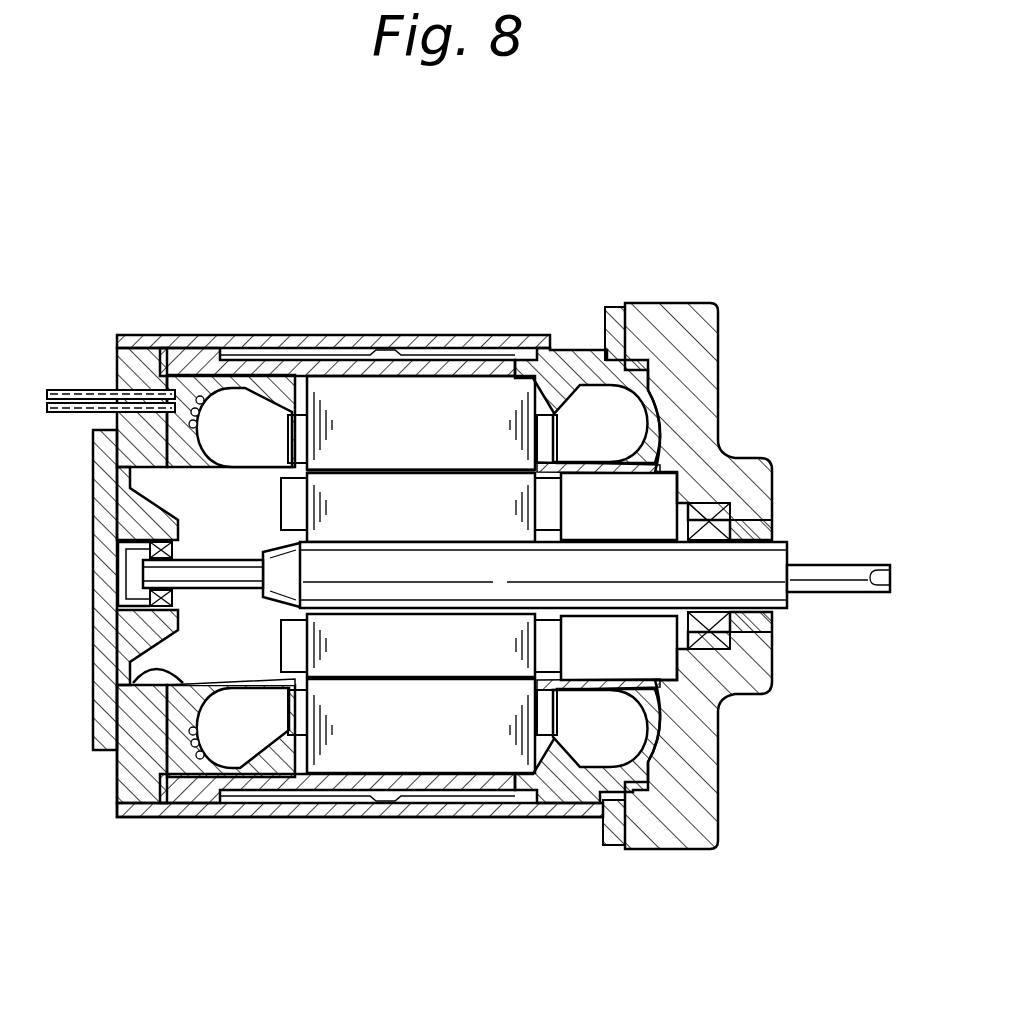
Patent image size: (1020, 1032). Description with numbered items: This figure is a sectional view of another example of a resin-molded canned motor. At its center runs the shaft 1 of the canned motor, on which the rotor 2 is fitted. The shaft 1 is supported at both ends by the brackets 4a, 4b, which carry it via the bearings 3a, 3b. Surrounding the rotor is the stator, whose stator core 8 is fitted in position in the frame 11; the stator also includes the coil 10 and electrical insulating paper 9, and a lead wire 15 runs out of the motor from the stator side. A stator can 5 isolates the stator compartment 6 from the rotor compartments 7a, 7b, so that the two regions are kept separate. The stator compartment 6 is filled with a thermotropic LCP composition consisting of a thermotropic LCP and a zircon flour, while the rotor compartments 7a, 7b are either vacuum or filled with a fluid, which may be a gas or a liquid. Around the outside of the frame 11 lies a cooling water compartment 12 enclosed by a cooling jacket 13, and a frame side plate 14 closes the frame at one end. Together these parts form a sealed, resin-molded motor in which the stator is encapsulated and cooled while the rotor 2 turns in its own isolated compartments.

The shaft 1 is at (770, 590).
The rotor 2 is at (433, 663).
The bearing 3a is at (735, 630).
The bearing 3b is at (115, 553).
The bracket 4a is at (672, 318).
The bracket 4b is at (100, 575).
The stator can 5 is at (133, 678).
The stator compartment 6 is at (573, 368).
The rotor compartment 7a is at (725, 692).
The rotor compartment 7b is at (185, 636).
The stator core 8 is at (368, 408).
The electrical insulating paper 9 is at (265, 390).
The coil 10 is at (230, 413).
The frame 11 is at (474, 368).
The cooling water compartment 12 is at (425, 353).
The cooling jacket 13 is at (522, 346).
The frame side plate 14 is at (117, 768).
The lead wire 15 is at (93, 388).